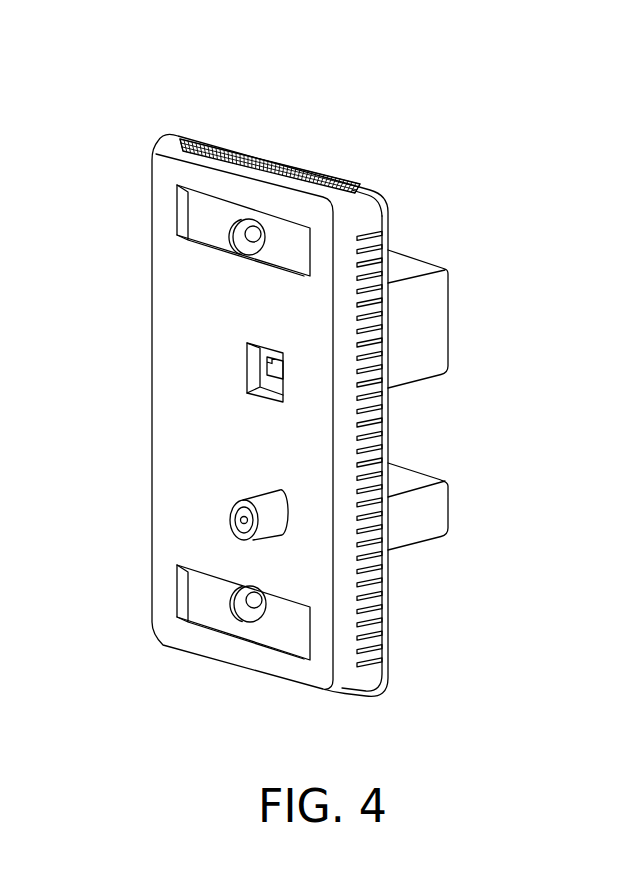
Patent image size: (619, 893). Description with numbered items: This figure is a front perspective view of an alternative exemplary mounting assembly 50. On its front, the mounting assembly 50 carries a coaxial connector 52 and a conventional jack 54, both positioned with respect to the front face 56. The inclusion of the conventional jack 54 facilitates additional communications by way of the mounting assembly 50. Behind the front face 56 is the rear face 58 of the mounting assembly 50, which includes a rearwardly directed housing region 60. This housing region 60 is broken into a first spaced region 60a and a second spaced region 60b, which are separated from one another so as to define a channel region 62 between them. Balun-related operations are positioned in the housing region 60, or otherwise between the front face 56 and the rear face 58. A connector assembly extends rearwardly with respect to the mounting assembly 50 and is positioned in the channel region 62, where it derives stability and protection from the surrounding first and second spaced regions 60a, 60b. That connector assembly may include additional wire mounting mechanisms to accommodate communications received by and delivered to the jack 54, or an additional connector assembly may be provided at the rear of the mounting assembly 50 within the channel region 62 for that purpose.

The mounting assembly 50 is at (512, 118).
The coaxial connector 52 is at (265, 502).
The conventional jack 54 is at (266, 368).
The front face 56 is at (190, 316).
The rear face 58 is at (320, 167).
The housing region 60 is at (553, 255).
The first spaced region 60a is at (430, 303).
The second spaced region 60b is at (432, 517).
The channel region 62 is at (402, 431).